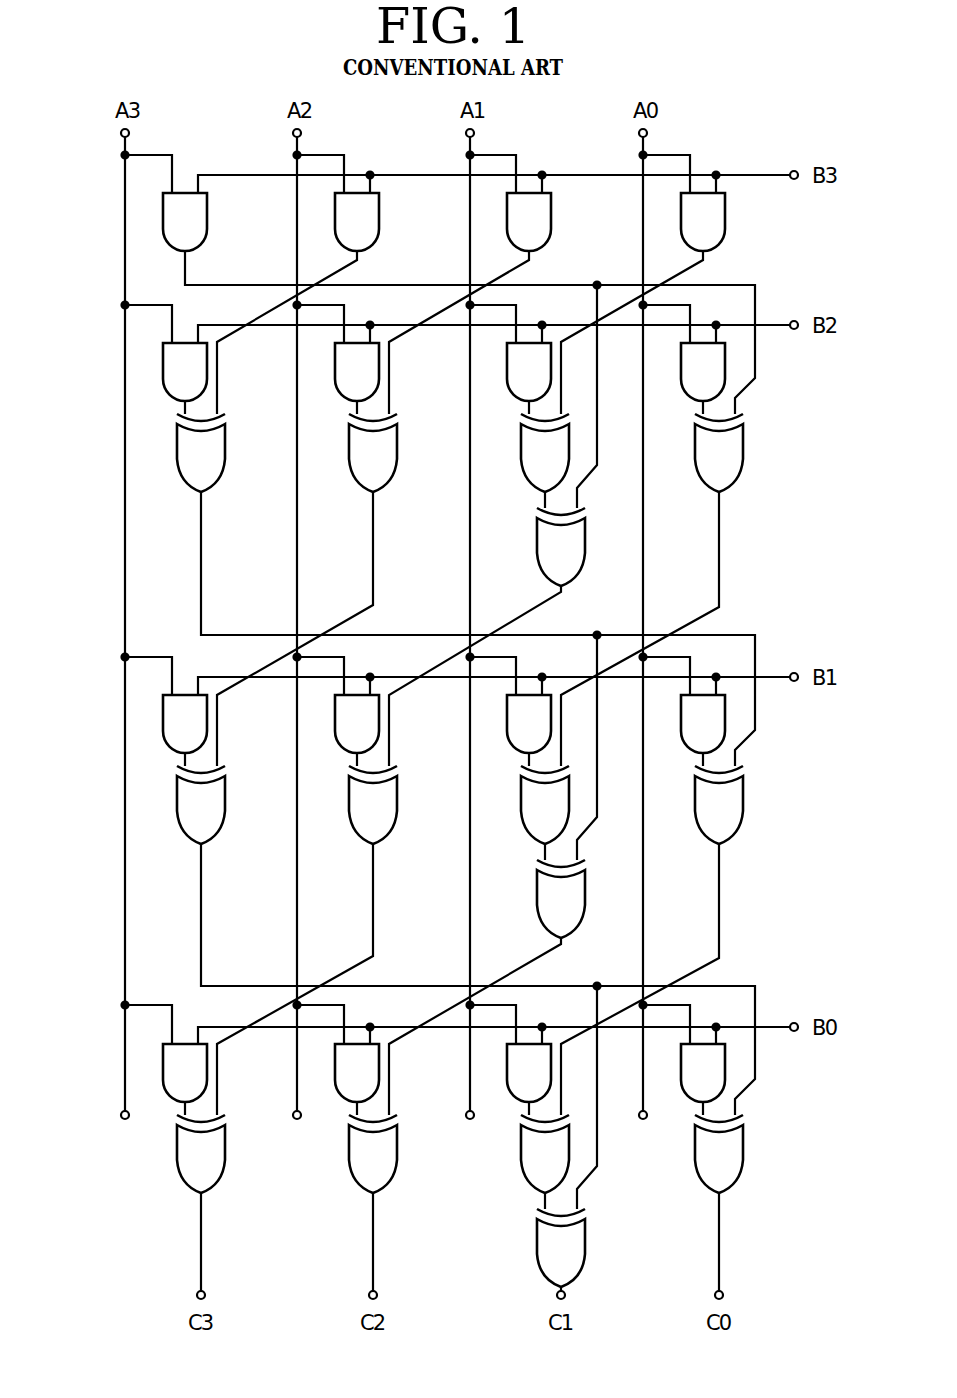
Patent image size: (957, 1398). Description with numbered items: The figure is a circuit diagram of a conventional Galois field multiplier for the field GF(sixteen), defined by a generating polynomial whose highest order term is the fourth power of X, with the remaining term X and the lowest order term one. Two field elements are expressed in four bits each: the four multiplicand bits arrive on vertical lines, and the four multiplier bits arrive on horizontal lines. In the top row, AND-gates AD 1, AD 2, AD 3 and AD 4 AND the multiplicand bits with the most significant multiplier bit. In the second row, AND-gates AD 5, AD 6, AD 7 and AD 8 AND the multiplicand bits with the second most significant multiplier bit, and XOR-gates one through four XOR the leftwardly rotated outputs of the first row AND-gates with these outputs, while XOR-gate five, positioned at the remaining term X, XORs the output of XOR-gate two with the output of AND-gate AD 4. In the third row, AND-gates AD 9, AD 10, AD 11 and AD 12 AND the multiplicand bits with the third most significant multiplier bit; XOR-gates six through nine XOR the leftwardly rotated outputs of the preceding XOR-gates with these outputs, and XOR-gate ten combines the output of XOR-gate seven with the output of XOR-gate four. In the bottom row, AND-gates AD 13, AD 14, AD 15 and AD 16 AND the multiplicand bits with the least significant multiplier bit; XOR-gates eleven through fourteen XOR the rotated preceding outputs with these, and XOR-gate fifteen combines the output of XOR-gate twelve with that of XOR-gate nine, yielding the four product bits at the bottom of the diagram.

The AND-gate AD1 1 is at (703, 222).
The AND-gate AD2 2 is at (529, 222).
The AND-gate AD3 3 is at (357, 222).
The AND-gate AD4 4 is at (185, 222).
The AND-gate AD5 5 is at (703, 372).
The AND-gate AD6 6 is at (529, 372).
The AND-gate AD7 7 is at (357, 372).
The AND-gate AD8 8 is at (185, 372).
The AND-gate AD9 9 is at (703, 724).
The AND-gate AD10 10 is at (529, 724).
The AND-gate AD11 11 is at (357, 724).
The AND-gate AD12 12 is at (185, 724).
The AND-gate AD13 13 is at (703, 1073).
The AND-gate AD14 14 is at (529, 1073).
The AND-gate AD15 15 is at (357, 1073).
The AND-gate AD16 16 is at (185, 1073).